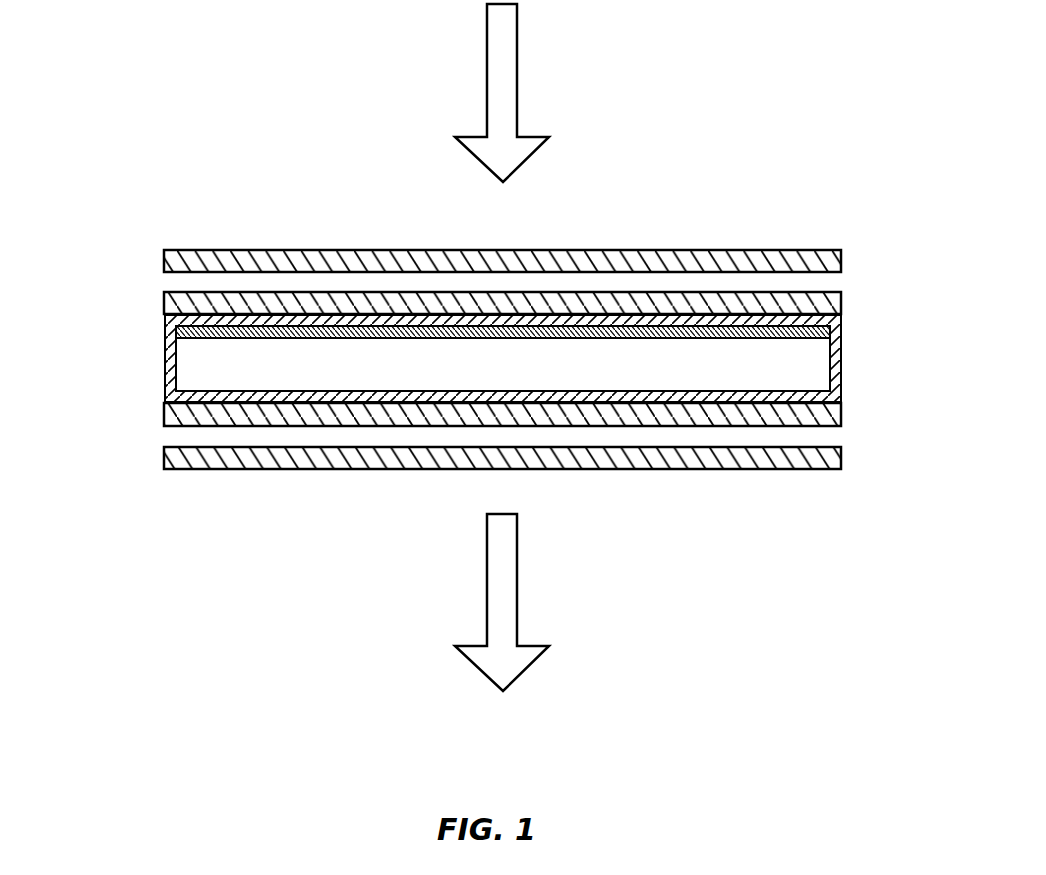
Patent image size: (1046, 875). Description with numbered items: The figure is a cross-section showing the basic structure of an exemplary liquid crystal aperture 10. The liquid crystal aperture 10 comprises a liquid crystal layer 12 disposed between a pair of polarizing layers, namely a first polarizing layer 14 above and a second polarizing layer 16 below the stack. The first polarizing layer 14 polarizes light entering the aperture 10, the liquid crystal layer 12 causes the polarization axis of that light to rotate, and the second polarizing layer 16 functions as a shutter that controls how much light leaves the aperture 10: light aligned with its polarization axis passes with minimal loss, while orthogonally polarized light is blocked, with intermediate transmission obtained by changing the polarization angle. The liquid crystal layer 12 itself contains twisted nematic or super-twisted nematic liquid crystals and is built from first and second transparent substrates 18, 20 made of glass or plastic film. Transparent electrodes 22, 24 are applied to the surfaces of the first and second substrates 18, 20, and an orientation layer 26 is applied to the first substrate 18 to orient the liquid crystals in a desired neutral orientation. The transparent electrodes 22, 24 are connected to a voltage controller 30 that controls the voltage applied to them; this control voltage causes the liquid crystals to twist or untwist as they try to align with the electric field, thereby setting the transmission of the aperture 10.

The liquid crystal aperture 10 is at (655, 115).
The liquid crystal layer 12 is at (158, 327).
The first polarizing layer 14 is at (287, 249).
The second polarizing layer 16 is at (673, 470).
The first transparent substrate 18 is at (390, 292).
The second transparent substrate 20 is at (415, 427).
The transparent electrode 22 is at (517, 327).
The transparent electrode 24 is at (295, 403).
The orientation layer 26 is at (642, 326).
The voltage controller 30 is at (793, 357).